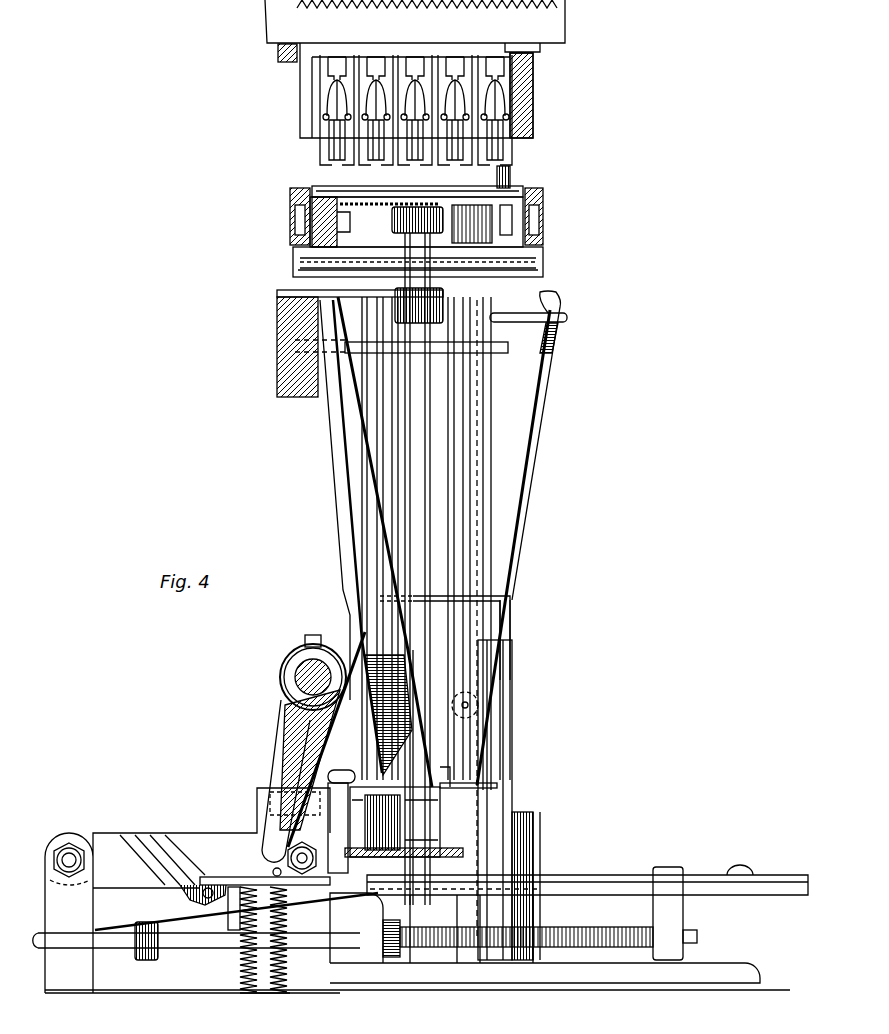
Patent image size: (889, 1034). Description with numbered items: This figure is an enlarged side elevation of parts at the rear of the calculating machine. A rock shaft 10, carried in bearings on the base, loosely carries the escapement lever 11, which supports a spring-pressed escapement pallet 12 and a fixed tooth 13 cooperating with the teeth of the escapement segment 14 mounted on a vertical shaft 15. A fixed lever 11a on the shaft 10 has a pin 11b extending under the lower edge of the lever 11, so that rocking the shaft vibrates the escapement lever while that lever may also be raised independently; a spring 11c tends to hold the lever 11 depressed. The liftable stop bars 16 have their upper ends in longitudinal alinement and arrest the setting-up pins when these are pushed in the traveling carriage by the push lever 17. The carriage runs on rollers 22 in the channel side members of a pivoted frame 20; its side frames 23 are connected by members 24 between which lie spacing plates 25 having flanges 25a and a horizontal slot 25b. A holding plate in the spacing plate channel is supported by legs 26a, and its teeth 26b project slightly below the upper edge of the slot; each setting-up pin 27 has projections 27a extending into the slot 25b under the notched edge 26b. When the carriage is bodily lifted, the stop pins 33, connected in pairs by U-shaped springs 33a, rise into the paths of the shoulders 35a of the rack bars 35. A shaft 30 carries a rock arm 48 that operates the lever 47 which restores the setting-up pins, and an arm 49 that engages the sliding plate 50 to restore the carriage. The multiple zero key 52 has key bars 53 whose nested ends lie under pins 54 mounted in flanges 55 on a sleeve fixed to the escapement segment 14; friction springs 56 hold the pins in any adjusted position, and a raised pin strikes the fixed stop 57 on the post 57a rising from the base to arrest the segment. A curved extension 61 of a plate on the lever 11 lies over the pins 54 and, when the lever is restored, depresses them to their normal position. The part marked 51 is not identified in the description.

The rock shaft 10 is at (82, 835).
The escapement lever 11 is at (149, 861).
The fixed lever 11a is at (200, 895).
The pin 11b is at (244, 939).
The spring 11c is at (259, 1004).
The escapement pallet 12 is at (328, 830).
The fixed tooth 13 is at (302, 884).
The escapement segment 14 is at (535, 850).
The vertical shaft 15 is at (430, 765).
The liftable stop bars 16 is at (455, 462).
The push lever 17 is at (520, 512).
The frame 20 is at (545, 190).
The rollers 22 is at (545, 232).
The carriage side frames 23 is at (538, 250).
The connecting members 24 is at (437, 555).
The spacing plates 25 is at (505, 267).
The flanges 25a is at (330, 292).
The slot 25b is at (282, 330).
The legs 26a is at (505, 265).
The teeth 26b is at (398, 258).
The setting-up pin 27 is at (510, 180).
The guiding projections 27a is at (456, 333).
The shaft 30 is at (292, 677).
The stop pins 33 is at (505, 160).
The U-shaped springs 33a is at (465, 115).
The rack bars 35 is at (415, 69).
The shoulders 35a is at (513, 44).
The lever 47 is at (340, 440).
The rock arm 48 is at (319, 754).
The arm 49 is at (301, 776).
The sliding plate 50 is at (215, 876).
The knob 51 is at (160, 945).
The multiple zero key 52 is at (418, 834).
The key bars 53 is at (196, 921).
The pins 54 is at (365, 928).
The flanges 55 is at (497, 786).
The friction springs 56 is at (512, 800).
The fixed stop 57 is at (450, 777).
The post 57a is at (533, 826).
The curved extension 61 is at (388, 790).